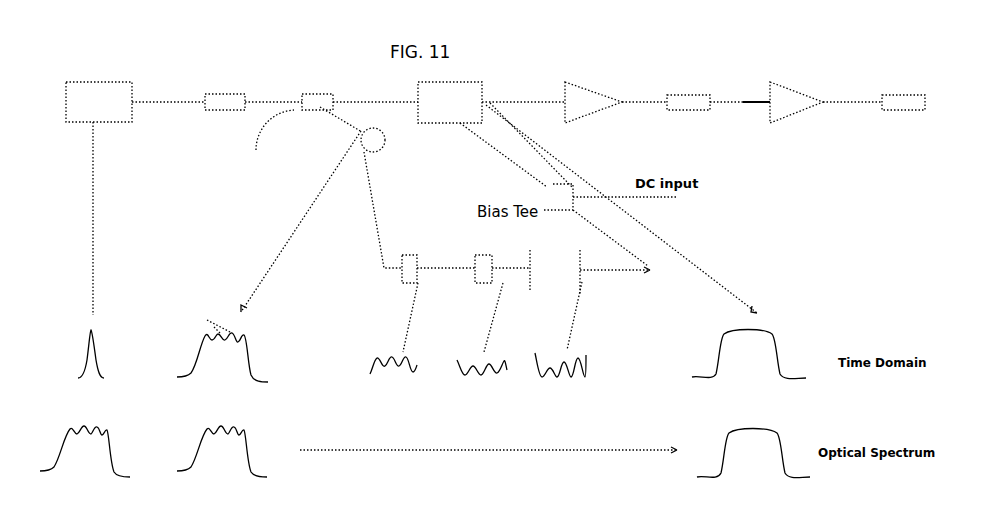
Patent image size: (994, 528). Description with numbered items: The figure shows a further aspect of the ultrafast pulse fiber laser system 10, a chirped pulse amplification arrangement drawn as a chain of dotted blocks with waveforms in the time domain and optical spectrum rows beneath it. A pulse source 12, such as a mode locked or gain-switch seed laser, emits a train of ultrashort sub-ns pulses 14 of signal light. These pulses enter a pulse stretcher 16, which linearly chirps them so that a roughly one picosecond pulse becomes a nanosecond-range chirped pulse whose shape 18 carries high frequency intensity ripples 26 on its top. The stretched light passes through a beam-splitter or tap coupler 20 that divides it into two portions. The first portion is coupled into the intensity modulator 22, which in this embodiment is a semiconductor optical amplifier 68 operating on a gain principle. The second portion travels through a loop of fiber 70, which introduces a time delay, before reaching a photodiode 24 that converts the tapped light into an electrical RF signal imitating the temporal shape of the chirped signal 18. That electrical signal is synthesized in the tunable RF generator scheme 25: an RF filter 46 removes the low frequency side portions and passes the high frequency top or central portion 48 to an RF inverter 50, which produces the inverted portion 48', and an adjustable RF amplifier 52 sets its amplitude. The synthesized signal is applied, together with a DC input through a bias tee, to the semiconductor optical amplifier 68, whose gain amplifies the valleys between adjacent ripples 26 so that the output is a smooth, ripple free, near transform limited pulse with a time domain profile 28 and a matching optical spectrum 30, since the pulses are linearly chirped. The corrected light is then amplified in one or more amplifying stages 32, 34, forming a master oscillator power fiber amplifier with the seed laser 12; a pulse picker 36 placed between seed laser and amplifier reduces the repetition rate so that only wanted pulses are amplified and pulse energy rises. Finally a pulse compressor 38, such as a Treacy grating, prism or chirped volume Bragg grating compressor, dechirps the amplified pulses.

The ultrafast pulse fiber laser system 10 is at (737, 163).
The pulse source 12 is at (99, 198).
The ultrashort sub-ns pulses 14 is at (75, 352).
The pulse stretcher 16 is at (216, 112).
The chirped pulse spectral shape 18 is at (249, 358).
The beam-splitter or tap coupler 20 is at (320, 112).
The intensity modulator 22 is at (492, 99).
The photodiode 24 is at (362, 206).
The tunable RF generator scheme 25 is at (452, 179).
The intensity ripples 26 is at (275, 232).
The time domain intensity profile 28 is at (749, 354).
The ripple free near transform limited pulse spectrum 30 is at (753, 453).
The first amplifying stage 32 is at (593, 102).
The second amplifying stage 34 is at (796, 102).
The pulse picker 36 is at (704, 108).
The pulse compressor 38 is at (908, 108).
The RF filter 46 is at (412, 258).
The top or central portion of electrical signal 48 is at (394, 343).
The inverted top portion of electrical signal 48' is at (482, 343).
The RF inverter 50 is at (481, 258).
The RF amplifier 52 is at (556, 276).
The semiconductor optical amplifier 68 is at (450, 102).
The loop of fiber 70 is at (384, 146).